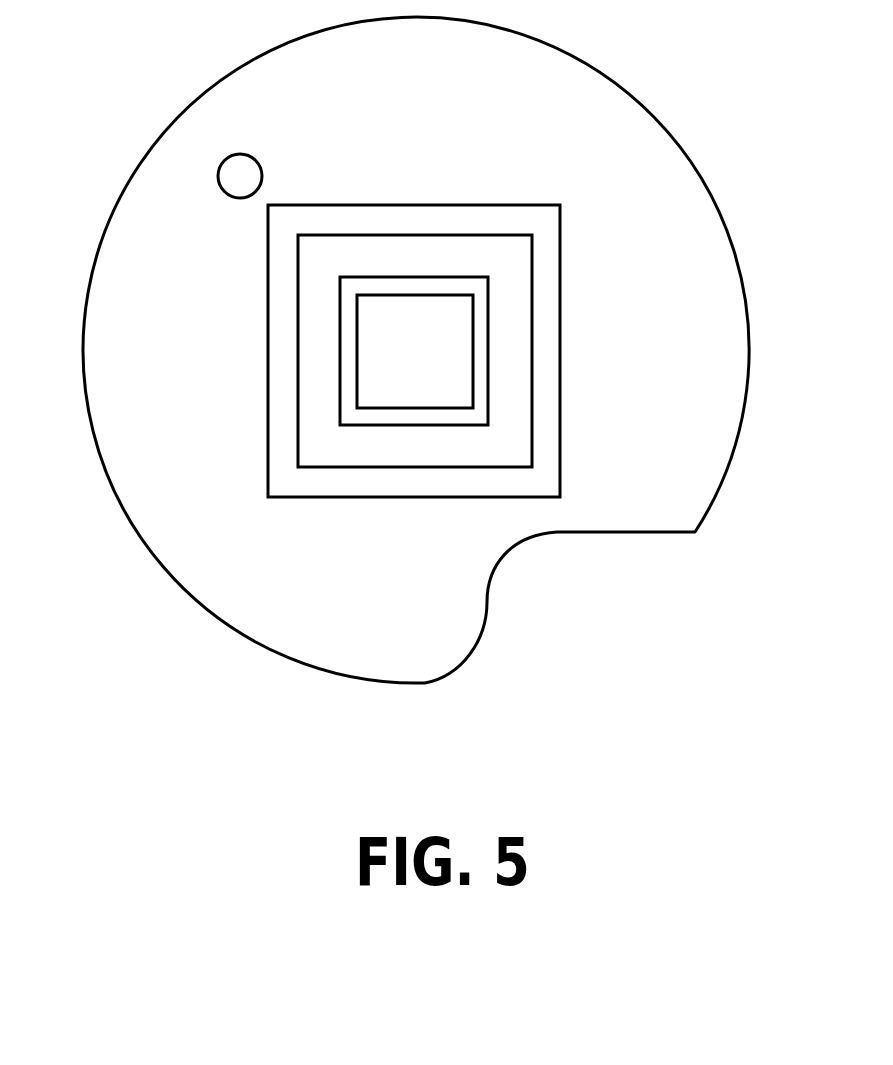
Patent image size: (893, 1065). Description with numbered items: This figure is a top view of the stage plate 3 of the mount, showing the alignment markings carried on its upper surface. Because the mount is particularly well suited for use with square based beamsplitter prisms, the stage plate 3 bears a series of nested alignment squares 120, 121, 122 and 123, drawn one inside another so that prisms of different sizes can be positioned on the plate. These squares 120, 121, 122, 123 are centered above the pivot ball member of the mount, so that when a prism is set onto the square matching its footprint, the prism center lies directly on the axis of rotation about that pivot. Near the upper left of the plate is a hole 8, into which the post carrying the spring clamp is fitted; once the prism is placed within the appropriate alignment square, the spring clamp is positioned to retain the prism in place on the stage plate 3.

The stage plate 3 is at (617, 110).
The hole 8 is at (226, 159).
The alignment square 120 is at (562, 248).
The alignment square 121 is at (532, 308).
The alignment square 122 is at (488, 368).
The alignment square 123 is at (473, 397).